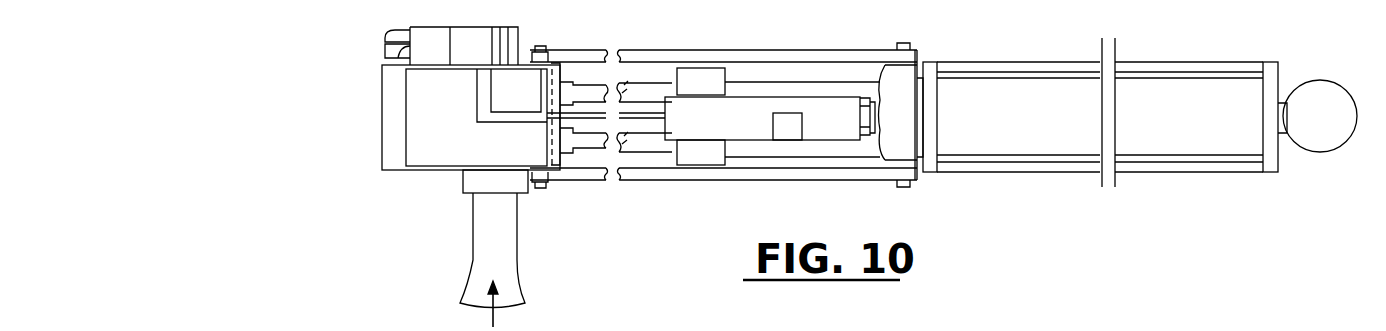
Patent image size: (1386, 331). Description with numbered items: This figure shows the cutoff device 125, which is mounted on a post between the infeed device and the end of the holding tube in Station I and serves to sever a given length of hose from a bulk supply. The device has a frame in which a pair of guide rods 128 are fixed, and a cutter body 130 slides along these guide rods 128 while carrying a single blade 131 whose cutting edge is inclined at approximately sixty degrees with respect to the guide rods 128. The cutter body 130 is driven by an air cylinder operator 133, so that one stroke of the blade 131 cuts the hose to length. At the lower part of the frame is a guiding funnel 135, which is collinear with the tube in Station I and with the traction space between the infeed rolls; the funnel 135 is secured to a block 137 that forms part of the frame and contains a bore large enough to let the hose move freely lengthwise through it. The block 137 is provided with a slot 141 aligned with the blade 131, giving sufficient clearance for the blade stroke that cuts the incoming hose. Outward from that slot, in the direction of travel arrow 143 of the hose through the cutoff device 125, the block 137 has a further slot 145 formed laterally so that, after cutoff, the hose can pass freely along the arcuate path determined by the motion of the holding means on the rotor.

The cutoff device 125 is at (453, 217).
The guide rods 128 is at (648, 92).
The cutter body 130 is at (722, 77).
The blade 131 is at (593, 118).
The air cylinder operator 133 is at (1157, 90).
The guiding funnel 135 is at (507, 253).
The block 137 is at (422, 128).
The slot 141 is at (513, 117).
The direction of travel arrow 143 is at (495, 317).
The slot 145 is at (504, 15).